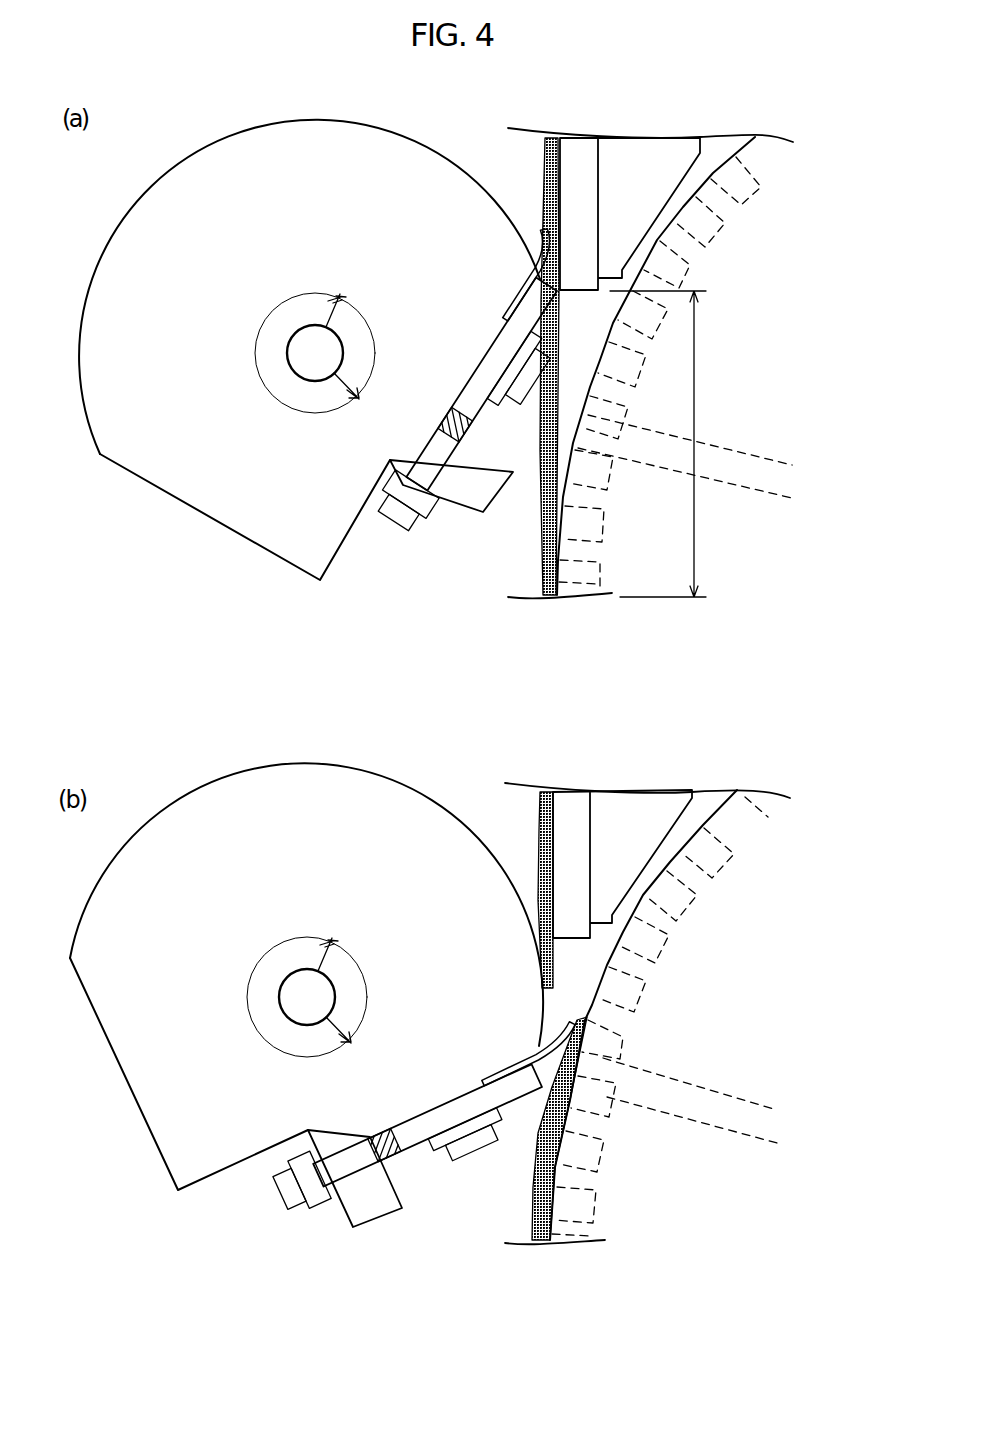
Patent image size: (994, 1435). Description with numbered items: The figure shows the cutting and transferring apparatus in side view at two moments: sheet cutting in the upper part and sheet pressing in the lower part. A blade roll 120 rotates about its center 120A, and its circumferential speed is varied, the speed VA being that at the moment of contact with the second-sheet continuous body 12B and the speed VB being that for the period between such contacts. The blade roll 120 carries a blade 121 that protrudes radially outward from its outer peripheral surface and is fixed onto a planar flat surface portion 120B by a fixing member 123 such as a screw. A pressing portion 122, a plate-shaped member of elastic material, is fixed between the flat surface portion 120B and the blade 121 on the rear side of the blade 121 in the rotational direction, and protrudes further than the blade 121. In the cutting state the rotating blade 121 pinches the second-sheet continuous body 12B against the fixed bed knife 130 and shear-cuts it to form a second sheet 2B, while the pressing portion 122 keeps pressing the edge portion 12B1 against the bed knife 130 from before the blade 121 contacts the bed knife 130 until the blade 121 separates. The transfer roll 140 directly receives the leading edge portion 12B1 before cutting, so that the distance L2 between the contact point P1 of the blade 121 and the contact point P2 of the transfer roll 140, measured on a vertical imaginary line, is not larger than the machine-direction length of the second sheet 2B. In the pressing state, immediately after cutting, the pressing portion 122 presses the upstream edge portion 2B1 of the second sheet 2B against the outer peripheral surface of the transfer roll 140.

The blade roll 120 is at (316, 128).
The rotation shaft 120A is at (300, 352).
The flat surface portion 120B is at (470, 393).
The blade 121 is at (500, 346).
The pressing portion 122 is at (538, 244).
The fixing member 123 is at (503, 404).
The second-sheet continuous body 12B is at (546, 139).
The edge portion 12B1 is at (543, 975).
The second sheet 2B is at (533, 1208).
The upstream edge portion 2B1 is at (568, 1037).
The bed knife 130 is at (578, 180).
The transfer roll 140 is at (792, 320).
The contact point P1 is at (560, 598).
The contact point P2 is at (560, 292).
The distance L2 is at (666, 444).
The circumferential speed VA is at (358, 644).
The circumferential speed VB is at (293, 715).